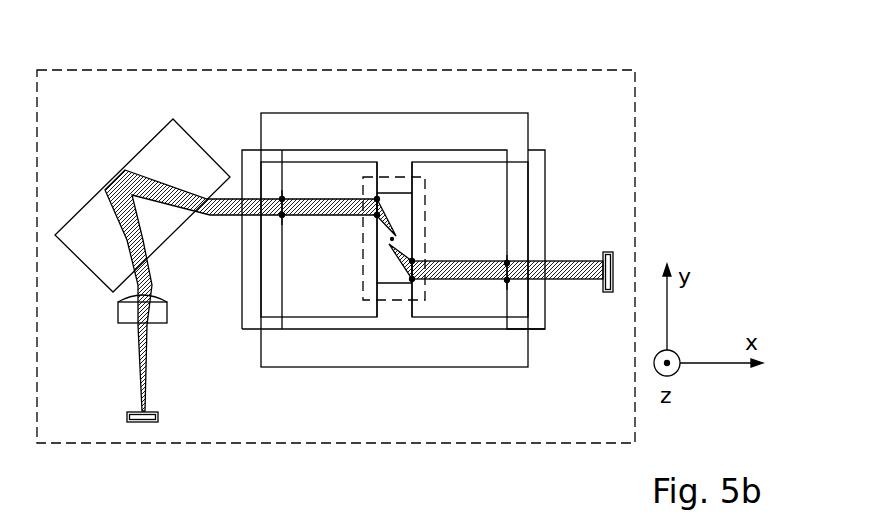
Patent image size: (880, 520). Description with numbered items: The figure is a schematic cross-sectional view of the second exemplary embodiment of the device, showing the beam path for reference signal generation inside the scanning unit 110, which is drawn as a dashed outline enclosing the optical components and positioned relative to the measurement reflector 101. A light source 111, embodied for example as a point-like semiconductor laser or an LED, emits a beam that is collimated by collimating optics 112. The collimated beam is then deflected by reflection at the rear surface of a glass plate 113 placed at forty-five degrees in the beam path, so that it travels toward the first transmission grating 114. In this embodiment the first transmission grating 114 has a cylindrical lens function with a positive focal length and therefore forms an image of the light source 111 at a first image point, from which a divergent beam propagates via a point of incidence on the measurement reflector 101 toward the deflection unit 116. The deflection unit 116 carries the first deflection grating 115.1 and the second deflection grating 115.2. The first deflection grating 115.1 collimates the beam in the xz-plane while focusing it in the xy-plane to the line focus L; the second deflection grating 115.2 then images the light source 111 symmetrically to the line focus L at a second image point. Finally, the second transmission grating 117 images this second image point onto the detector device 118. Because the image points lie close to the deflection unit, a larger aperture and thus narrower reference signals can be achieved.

The scanning unit 110 is at (472, 69).
The measurement reflector 101 is at (540, 196).
The light source 111 is at (127, 418).
The collimating optics 112 is at (122, 311).
The glass plate 113 is at (160, 146).
The first transmission grating 114 is at (284, 206).
The first deflection grating 115.1 is at (376, 199).
The second deflection grating 115.2 is at (414, 261).
The deflection unit 116 is at (396, 302).
The second transmission grating 117 is at (505, 282).
The detector device 118 is at (606, 294).
The line focus L is at (391, 240).